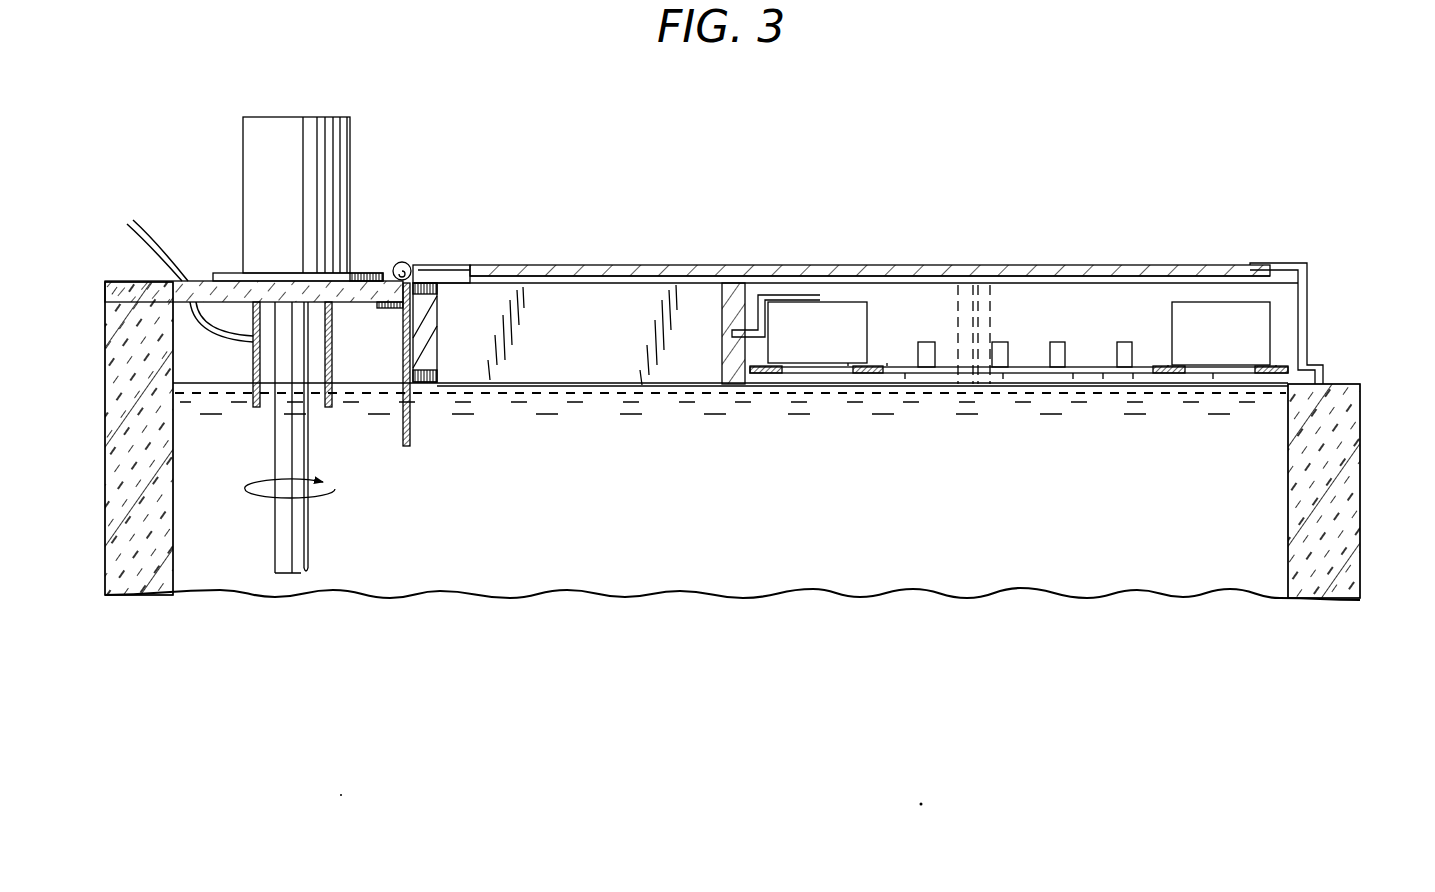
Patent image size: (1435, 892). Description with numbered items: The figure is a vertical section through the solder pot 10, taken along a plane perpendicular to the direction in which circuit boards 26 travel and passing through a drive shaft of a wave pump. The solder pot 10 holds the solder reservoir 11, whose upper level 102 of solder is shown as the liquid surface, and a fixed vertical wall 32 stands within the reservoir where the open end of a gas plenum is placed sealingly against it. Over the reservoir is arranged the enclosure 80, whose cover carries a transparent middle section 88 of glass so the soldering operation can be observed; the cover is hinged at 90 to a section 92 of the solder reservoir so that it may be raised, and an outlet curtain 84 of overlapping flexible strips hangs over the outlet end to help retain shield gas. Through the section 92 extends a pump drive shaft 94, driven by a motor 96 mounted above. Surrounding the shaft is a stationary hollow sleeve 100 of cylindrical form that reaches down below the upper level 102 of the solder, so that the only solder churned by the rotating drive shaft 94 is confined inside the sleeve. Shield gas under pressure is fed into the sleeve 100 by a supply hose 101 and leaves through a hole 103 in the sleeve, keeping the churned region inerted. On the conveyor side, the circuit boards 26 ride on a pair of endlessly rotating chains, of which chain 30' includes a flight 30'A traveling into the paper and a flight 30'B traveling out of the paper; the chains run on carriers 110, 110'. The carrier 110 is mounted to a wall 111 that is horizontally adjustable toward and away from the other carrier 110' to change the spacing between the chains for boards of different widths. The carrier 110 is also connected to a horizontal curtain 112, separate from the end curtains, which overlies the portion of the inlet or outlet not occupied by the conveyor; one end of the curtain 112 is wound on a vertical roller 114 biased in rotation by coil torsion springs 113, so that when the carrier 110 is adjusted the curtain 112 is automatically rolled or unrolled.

The solder pot 10 is at (1362, 505).
The solder reservoir 11 is at (1175, 588).
The circuit boards 26 is at (1080, 365).
The conveyor chain 30' is at (889, 418).
The flight 30'A is at (854, 418).
The flight 30'B is at (761, 418).
The fixed vertical wall 32 is at (410, 447).
The enclosure 80 is at (710, 265).
The outlet curtain 84 is at (990, 300).
The transparent middle section 88 is at (940, 270).
The hinge 90 is at (408, 261).
The section of solder reservoir 92 is at (207, 286).
The pump drive shaft 94 is at (308, 540).
The motor 96 is at (355, 148).
The hollow sleeve 100 is at (333, 368).
The supply hose 101 is at (152, 225).
The upper level of solder 102 is at (190, 378).
The hole 103 is at (330, 342).
The carrier 110 is at (832, 287).
The carrier 110' is at (1227, 290).
The wall 111 is at (752, 300).
The horizontal curtain 112 is at (592, 300).
The coil torsion springs 113 is at (438, 287).
The vertical roller 114 is at (438, 315).